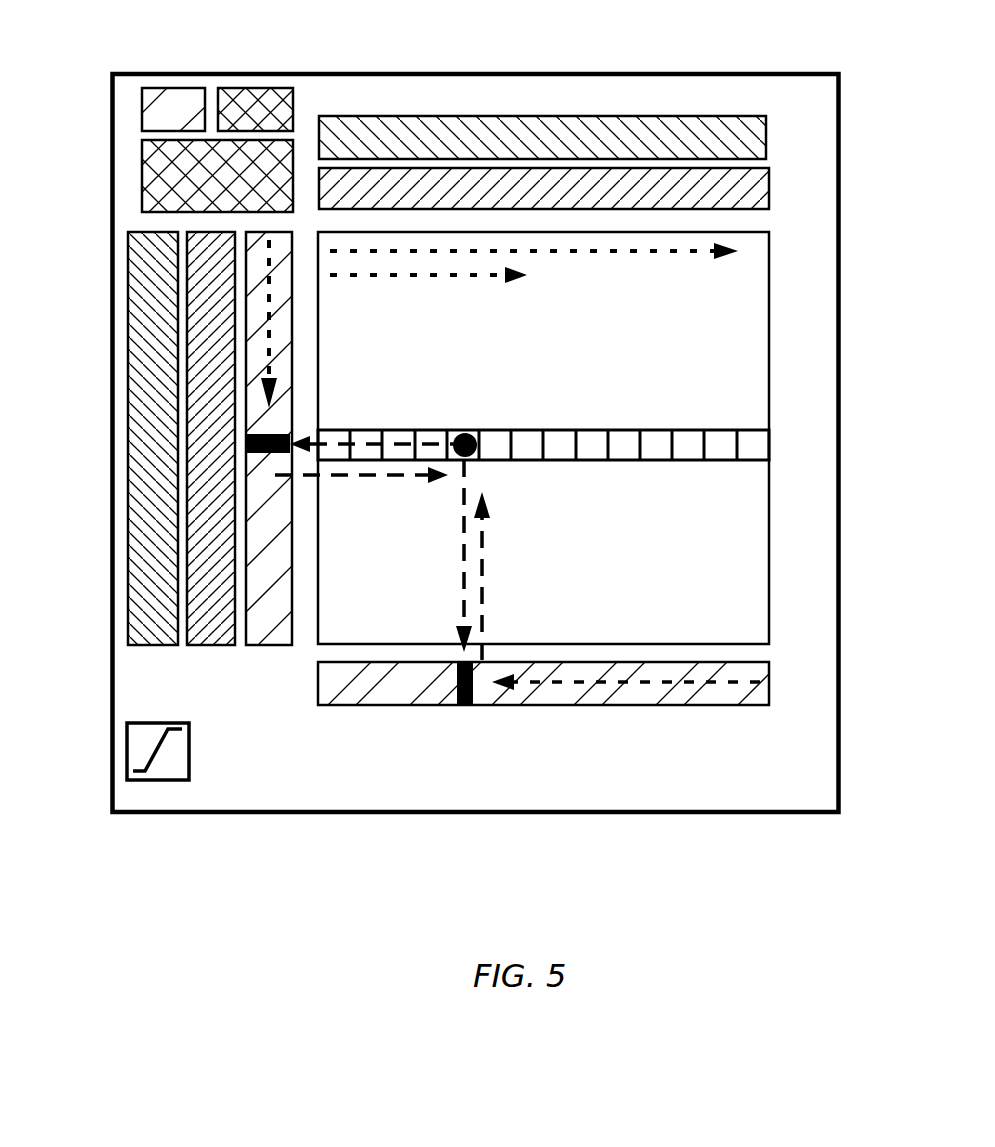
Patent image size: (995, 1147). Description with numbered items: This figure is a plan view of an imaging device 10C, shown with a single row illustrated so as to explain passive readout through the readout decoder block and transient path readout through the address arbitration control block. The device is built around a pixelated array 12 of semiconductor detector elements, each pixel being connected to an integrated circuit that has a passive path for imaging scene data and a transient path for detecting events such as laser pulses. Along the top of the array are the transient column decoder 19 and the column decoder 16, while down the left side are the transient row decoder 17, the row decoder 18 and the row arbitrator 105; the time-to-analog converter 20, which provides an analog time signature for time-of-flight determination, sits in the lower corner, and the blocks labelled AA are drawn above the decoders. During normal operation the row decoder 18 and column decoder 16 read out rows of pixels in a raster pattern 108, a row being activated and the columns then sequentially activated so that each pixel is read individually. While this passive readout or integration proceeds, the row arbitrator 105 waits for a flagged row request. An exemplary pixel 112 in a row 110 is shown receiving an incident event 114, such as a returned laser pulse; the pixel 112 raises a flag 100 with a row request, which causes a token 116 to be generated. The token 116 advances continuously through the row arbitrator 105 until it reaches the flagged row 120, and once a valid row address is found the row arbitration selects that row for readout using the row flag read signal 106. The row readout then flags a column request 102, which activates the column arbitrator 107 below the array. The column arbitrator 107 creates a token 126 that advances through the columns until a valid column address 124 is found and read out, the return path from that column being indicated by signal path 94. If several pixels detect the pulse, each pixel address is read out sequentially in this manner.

The imaging device 10C is at (632, 824).
The active area block AA is at (190, 87).
The pixelated array 12 is at (788, 364).
The column decoder 16 is at (764, 181).
The transient row decoder 17 is at (135, 478).
The row decoder 18 is at (198, 645).
The transient column decoder 19 is at (695, 116).
The time-to-analog converter 20 is at (128, 762).
The upward signal path 94 is at (483, 590).
The flag 100 is at (406, 442).
The column request 102 is at (462, 541).
The row arbitrator 105 is at (264, 645).
The row flag read signal 106 is at (405, 478).
The column arbitrator 107 is at (677, 705).
The raster pattern 108 is at (473, 279).
The row 110 is at (602, 460).
The pixel 112 is at (465, 430).
The incident event 114 is at (470, 458).
The token 116 is at (272, 313).
The flagged row 120 is at (285, 435).
The valid column address 124 is at (458, 706).
The token 126 is at (596, 684).